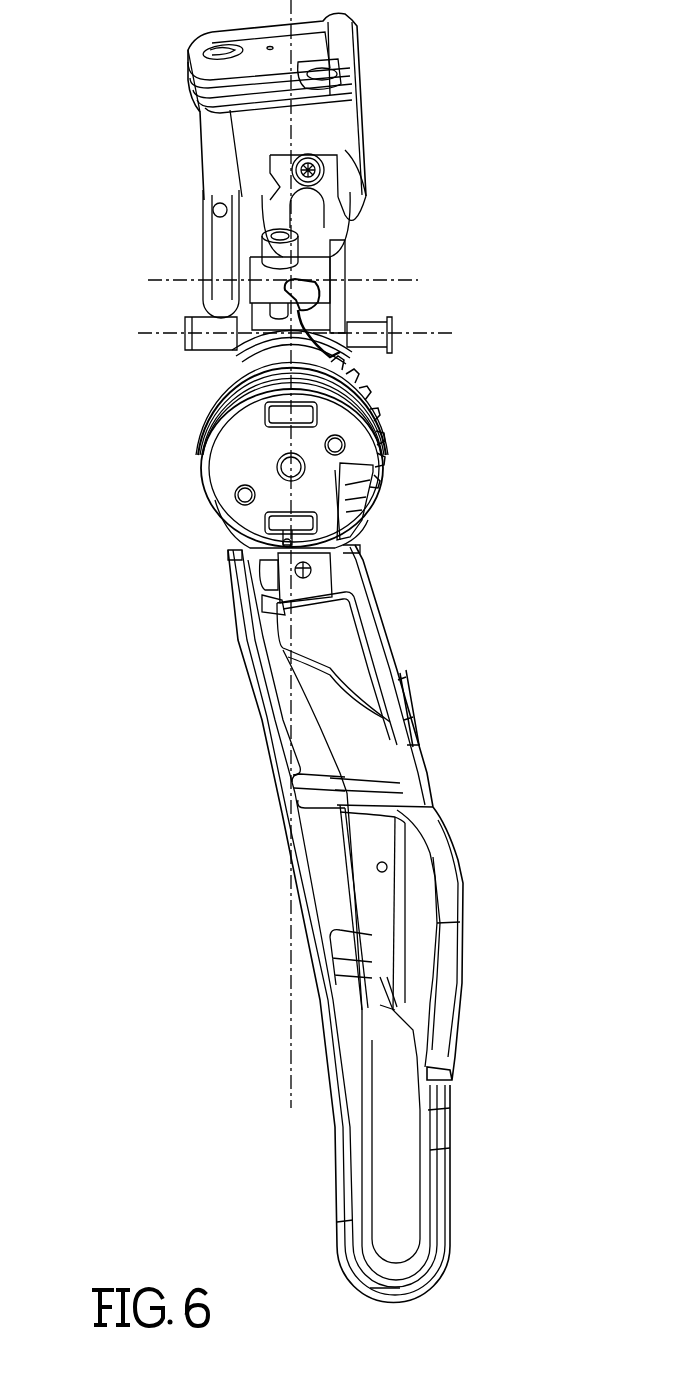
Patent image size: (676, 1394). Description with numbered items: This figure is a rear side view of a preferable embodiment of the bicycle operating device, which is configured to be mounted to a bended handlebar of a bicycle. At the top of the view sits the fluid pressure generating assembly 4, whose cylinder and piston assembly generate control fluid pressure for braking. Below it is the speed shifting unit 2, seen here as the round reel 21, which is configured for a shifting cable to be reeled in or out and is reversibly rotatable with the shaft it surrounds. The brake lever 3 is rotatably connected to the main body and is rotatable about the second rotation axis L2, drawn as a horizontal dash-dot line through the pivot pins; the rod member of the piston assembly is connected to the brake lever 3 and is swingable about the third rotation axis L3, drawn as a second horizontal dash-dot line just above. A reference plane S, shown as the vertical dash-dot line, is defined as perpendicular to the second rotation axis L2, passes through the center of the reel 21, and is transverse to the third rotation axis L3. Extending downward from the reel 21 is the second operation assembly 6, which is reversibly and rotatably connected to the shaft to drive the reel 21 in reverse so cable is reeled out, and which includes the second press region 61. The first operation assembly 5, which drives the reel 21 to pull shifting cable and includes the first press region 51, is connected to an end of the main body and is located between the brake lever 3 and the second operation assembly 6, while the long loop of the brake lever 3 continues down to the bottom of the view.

The speed shifting unit 2 is at (383, 397).
The reel 21 is at (355, 432).
The brake lever 3 is at (362, 1150).
The fluid pressure generating assembly 4 is at (350, 208).
The first operation assembly 5 is at (459, 957).
The first press region 51 is at (457, 988).
The second operation assembly 6 is at (402, 679).
The second press region 61 is at (412, 713).
The reference plane S is at (290, 1035).
The second rotation axis L2 is at (138, 333).
The third rotation axis L3 is at (148, 280).